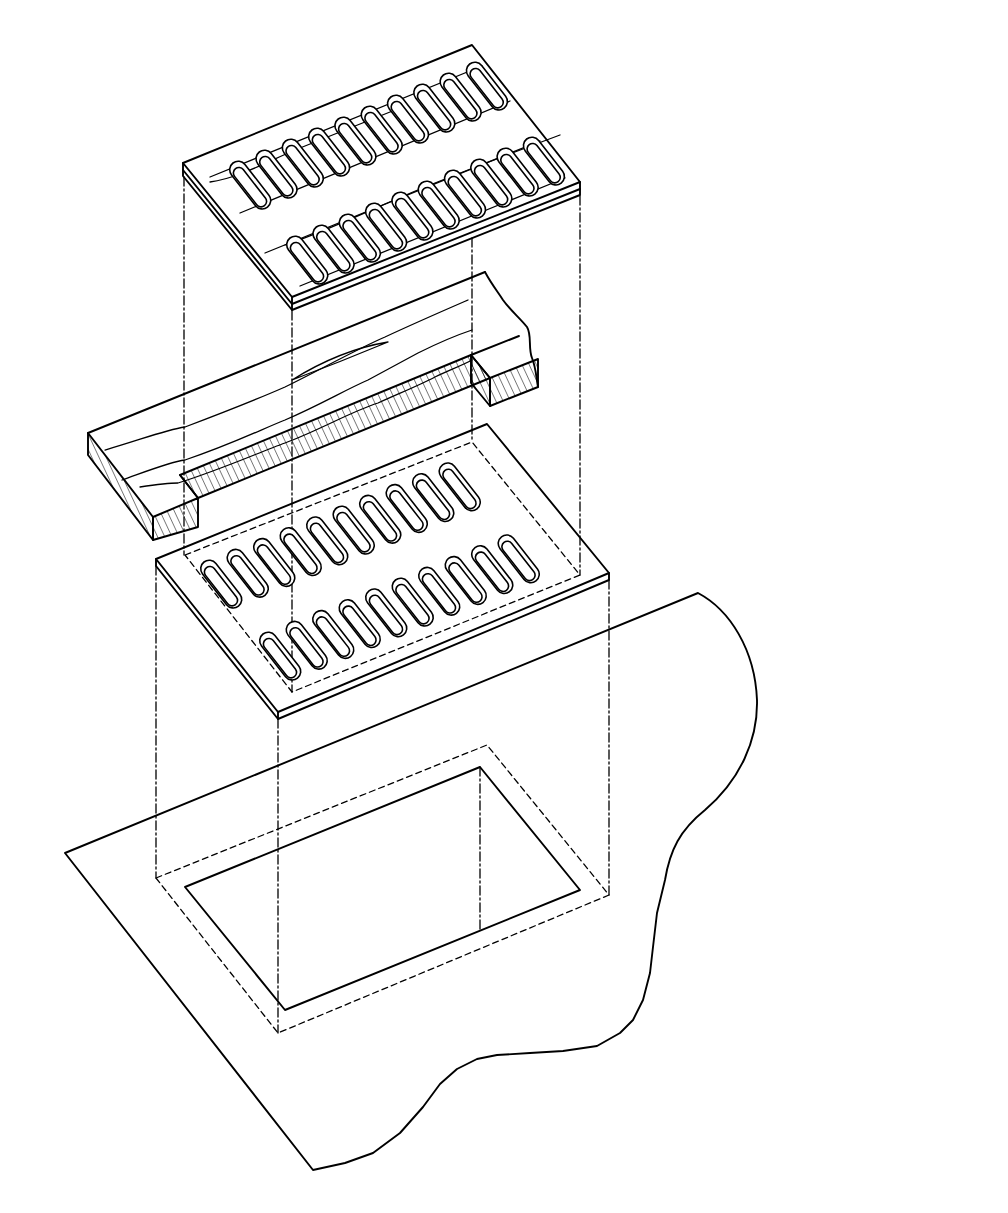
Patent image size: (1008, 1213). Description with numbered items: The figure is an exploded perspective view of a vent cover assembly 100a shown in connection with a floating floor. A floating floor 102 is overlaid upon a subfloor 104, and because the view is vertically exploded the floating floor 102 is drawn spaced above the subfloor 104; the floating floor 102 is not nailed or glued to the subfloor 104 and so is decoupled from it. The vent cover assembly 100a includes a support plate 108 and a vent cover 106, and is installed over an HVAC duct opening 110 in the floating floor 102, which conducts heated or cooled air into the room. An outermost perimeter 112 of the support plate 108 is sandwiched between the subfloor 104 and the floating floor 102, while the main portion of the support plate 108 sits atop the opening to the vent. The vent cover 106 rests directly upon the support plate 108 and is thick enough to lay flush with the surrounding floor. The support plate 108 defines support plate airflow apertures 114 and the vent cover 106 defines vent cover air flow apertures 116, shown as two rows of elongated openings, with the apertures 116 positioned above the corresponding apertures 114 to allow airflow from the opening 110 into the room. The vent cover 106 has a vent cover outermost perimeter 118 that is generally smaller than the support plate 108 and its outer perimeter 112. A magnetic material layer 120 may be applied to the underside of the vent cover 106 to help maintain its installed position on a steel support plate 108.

The vent cover assembly 100a is at (572, 63).
The floating floor 102 is at (500, 310).
The subfloor 104 is at (411, 881).
The vent cover 106 is at (342, 177).
The support plate 108 is at (429, 387).
The HVAC duct opening 110 is at (258, 893).
The outermost perimeter of the support plate 112 is at (565, 587).
The support plate airflow apertures 114 is at (457, 557).
The vent cover air flow apertures 116 is at (235, 160).
The vent cover outermost perimeter 118 is at (250, 228).
The magnetic material layer 120 is at (190, 196).